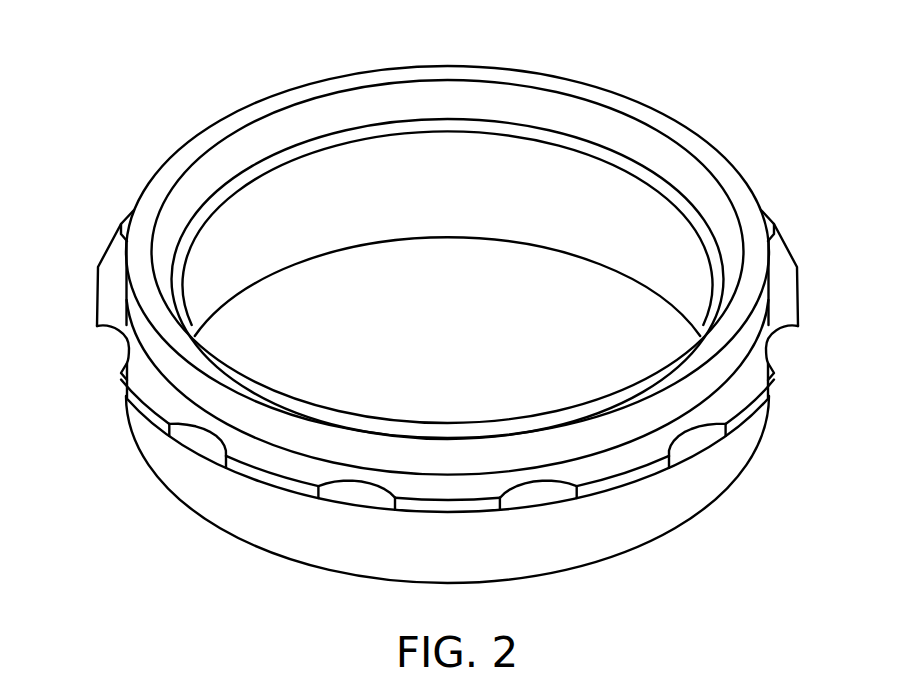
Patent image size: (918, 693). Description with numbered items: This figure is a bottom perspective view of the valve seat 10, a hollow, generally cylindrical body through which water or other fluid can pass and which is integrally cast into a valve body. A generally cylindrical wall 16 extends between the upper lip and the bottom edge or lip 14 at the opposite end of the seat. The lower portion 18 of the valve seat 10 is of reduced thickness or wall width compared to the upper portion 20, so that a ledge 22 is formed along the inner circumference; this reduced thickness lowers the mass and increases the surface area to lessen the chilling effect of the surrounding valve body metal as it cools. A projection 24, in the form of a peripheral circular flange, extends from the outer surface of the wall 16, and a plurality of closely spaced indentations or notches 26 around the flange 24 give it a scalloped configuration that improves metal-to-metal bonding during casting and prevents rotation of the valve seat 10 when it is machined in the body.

The valve seat 10 is at (745, 101).
The bottom edge or lip 14 is at (195, 147).
The wall 16 is at (203, 505).
The lower portion 18 is at (345, 114).
The upper portion 20 is at (348, 237).
The ledge 22 is at (616, 158).
The projection 24 is at (108, 290).
The indentations or notches 26 is at (120, 341).